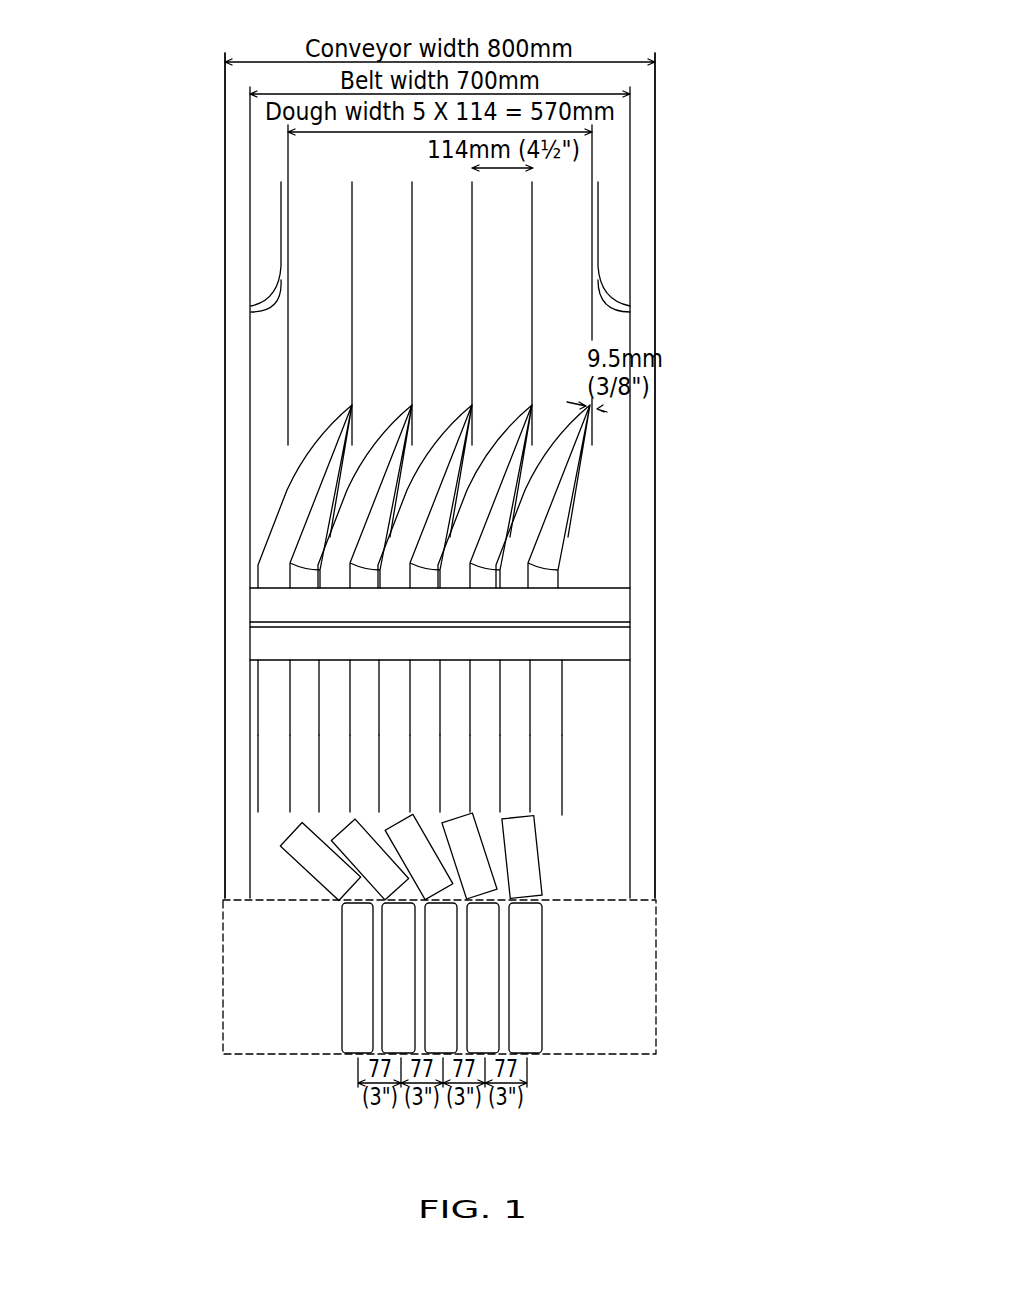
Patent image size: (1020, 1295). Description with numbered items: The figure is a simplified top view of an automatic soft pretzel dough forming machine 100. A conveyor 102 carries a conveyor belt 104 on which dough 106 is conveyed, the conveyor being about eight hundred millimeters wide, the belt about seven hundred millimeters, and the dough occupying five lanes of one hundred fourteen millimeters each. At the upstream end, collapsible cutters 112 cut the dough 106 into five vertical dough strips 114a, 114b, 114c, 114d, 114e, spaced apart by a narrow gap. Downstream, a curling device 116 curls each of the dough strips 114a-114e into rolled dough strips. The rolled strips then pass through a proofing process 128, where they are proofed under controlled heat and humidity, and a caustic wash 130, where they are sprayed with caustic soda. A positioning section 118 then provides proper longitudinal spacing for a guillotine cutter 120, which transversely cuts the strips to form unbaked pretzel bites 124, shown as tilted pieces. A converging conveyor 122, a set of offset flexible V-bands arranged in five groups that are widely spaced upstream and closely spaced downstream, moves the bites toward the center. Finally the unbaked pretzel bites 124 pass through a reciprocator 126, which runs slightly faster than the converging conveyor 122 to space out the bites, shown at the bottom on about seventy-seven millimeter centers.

The soft pretzel dough forming machine 100 is at (732, 64).
The conveyor 102 is at (657, 233).
The conveyor belt 104 is at (630, 220).
The dough 106 is at (587, 200).
The collapsible cutters 112 is at (676, 255).
The dough strip 114a is at (342, 228).
The dough strip 114b is at (402, 265).
The dough strip 114c is at (462, 295).
The dough strip 114d is at (522, 325).
The dough strip 114e is at (578, 367).
The curling device 116 is at (676, 568).
The positioning section 118 is at (676, 728).
The guillotine cutter 120 is at (676, 735).
The converging conveyor 122 is at (676, 827).
The unbaked pretzel bites 124 is at (338, 958).
The reciprocator 126 is at (676, 903).
The proofing process 128 is at (268, 603).
The caustic wash 130 is at (268, 647).